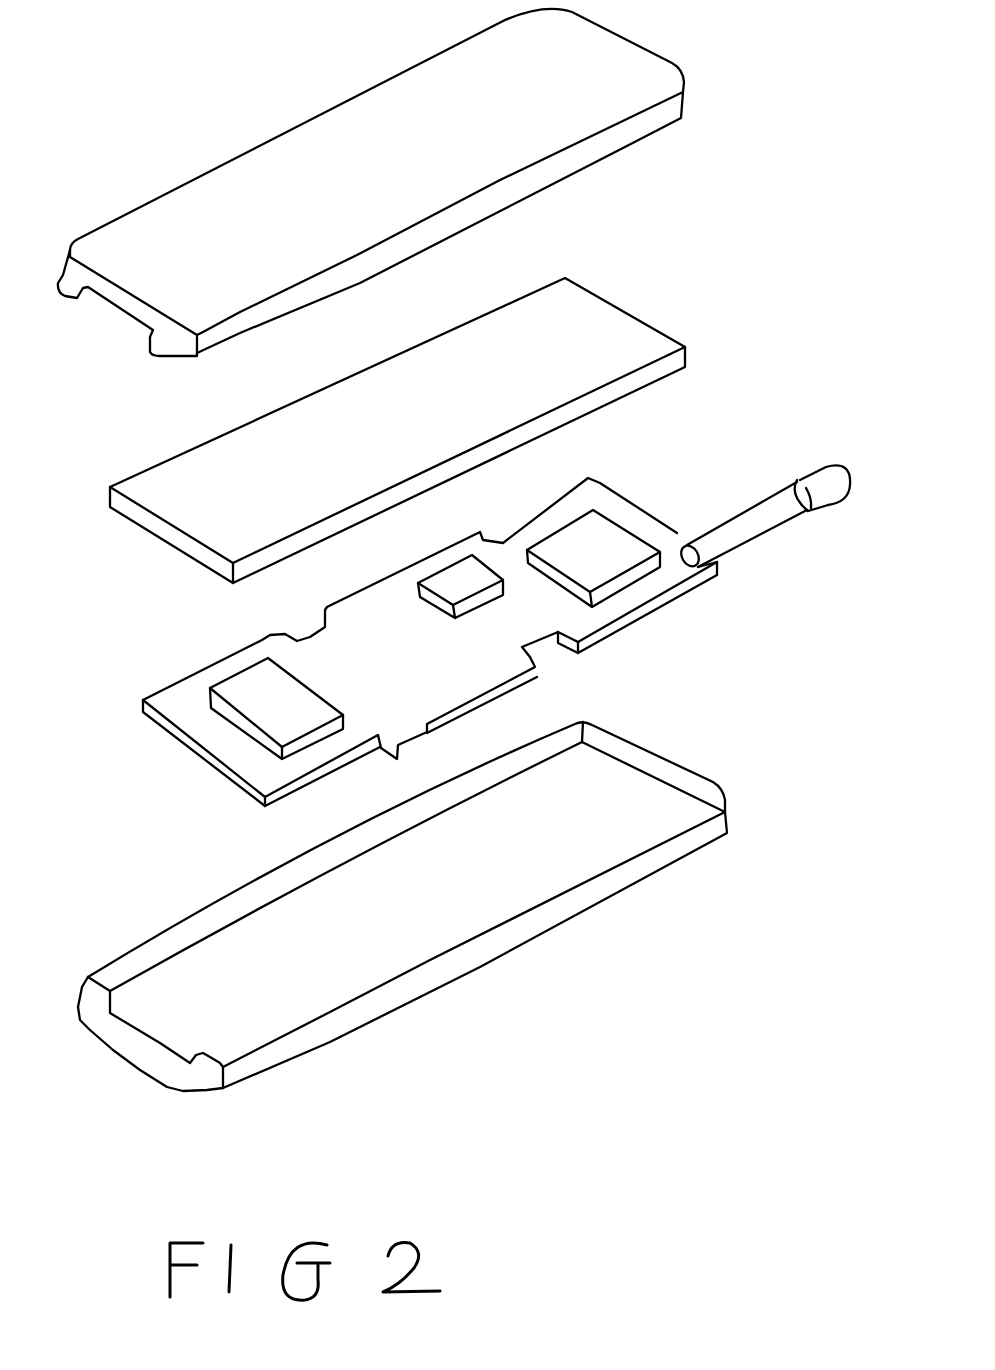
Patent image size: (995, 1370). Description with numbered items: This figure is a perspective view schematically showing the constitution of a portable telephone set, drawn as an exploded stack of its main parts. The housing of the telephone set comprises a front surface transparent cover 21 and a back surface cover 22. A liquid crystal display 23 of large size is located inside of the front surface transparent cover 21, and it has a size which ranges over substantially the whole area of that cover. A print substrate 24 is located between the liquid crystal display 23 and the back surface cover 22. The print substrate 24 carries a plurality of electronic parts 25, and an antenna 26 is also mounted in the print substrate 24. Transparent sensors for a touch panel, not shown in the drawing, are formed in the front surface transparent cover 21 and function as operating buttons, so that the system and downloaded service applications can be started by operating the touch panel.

The front surface transparent cover 21 is at (360, 105).
The back surface cover 22 is at (533, 925).
The liquid crystal display 23 is at (577, 302).
The print substrate 24 is at (592, 490).
The electronic parts 25 is at (570, 547).
The antenna 26 is at (750, 525).